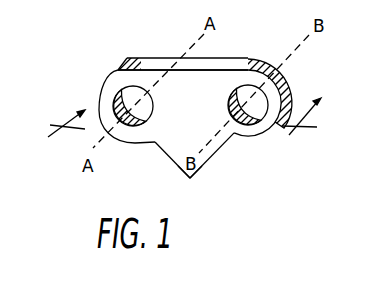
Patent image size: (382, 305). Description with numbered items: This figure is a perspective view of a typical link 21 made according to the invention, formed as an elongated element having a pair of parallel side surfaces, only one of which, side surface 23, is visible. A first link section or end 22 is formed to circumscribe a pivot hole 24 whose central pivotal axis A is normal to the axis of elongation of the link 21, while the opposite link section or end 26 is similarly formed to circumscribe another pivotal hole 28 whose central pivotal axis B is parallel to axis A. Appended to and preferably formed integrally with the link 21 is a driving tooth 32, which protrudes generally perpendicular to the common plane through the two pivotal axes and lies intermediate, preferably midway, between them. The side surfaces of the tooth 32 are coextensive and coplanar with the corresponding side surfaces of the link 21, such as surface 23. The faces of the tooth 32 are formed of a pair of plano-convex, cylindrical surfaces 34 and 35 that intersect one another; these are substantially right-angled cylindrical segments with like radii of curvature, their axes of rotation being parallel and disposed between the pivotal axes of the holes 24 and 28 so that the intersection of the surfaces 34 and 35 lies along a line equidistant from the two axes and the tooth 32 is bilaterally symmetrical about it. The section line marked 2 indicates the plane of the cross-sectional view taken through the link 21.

The link 21 is at (215, 80).
The first link section or end 22 is at (110, 89).
The side surface 23 is at (150, 78).
The pivot hole 24 is at (121, 91).
The opposite link section or end 26 is at (275, 105).
The pivotal hole 28 is at (229, 96).
The driving tooth 32 is at (204, 162).
The cylindrical surface 34 is at (160, 152).
The cylindrical surface 35 is at (229, 146).
The section line 2- 2 is at (180, 124).